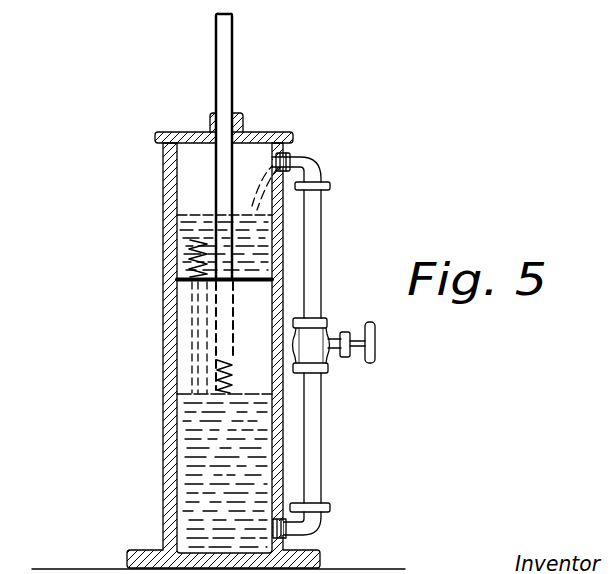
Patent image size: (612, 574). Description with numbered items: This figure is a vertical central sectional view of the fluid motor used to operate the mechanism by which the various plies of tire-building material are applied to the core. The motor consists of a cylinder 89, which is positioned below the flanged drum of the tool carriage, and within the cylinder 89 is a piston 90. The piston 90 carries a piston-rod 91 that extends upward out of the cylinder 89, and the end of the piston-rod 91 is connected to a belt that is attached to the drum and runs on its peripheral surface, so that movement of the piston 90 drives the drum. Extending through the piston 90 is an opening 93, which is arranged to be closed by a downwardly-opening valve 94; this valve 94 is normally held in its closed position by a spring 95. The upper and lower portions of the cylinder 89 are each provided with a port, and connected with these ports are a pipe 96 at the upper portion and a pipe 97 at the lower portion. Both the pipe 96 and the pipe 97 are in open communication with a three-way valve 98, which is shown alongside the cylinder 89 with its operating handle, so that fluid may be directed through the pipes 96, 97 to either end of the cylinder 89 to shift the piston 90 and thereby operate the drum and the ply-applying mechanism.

The cylinder 89 is at (165, 450).
The piston 90 is at (165, 350).
The piston-rod 91 is at (228, 38).
The opening 93 is at (192, 311).
The valve 94 is at (165, 395).
The spring 95 is at (165, 252).
The pipe 96 is at (318, 223).
The pipe 97 is at (315, 397).
The three-way valve 98 is at (330, 333).